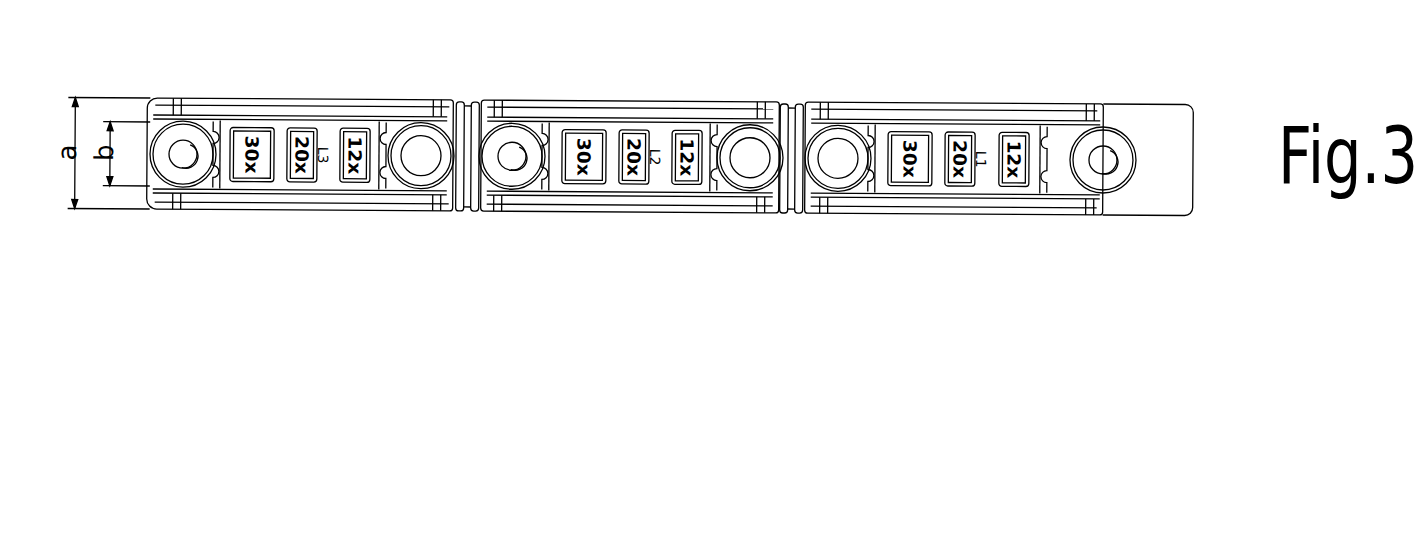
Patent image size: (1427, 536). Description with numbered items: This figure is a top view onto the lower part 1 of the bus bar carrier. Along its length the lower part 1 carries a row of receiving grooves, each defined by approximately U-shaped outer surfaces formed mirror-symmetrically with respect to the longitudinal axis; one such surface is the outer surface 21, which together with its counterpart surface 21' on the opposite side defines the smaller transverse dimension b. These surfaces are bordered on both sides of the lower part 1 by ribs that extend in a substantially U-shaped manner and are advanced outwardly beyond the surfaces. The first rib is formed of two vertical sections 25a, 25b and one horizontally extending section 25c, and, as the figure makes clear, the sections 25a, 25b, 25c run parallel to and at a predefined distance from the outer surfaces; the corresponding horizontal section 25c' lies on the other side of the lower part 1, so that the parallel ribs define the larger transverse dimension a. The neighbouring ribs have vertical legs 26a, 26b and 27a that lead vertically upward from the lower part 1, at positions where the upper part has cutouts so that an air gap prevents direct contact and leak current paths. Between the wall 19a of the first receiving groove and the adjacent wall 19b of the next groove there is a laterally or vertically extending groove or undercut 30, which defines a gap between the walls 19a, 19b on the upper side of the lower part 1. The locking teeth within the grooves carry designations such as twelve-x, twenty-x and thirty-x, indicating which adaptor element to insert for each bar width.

The lower part 1 is at (1041, 237).
The wall 19a is at (470, 100).
The adjacent wall 19b is at (557, 99).
The outer surface 21 is at (630, 238).
The opposite outer surface 21' is at (630, 73).
The vertical section of rib 25a is at (160, 205).
The vertical section of rib 25b is at (447, 213).
The horizontally extending section of rib 25c is at (302, 247).
The corresponding horizontal rib section 25c' is at (302, 69).
The vertical leg of rib 26a is at (500, 213).
The vertical leg of rib 26b is at (783, 213).
The vertical leg of rib 27a is at (817, 214).
The groove or undercut 30 is at (465, 213).